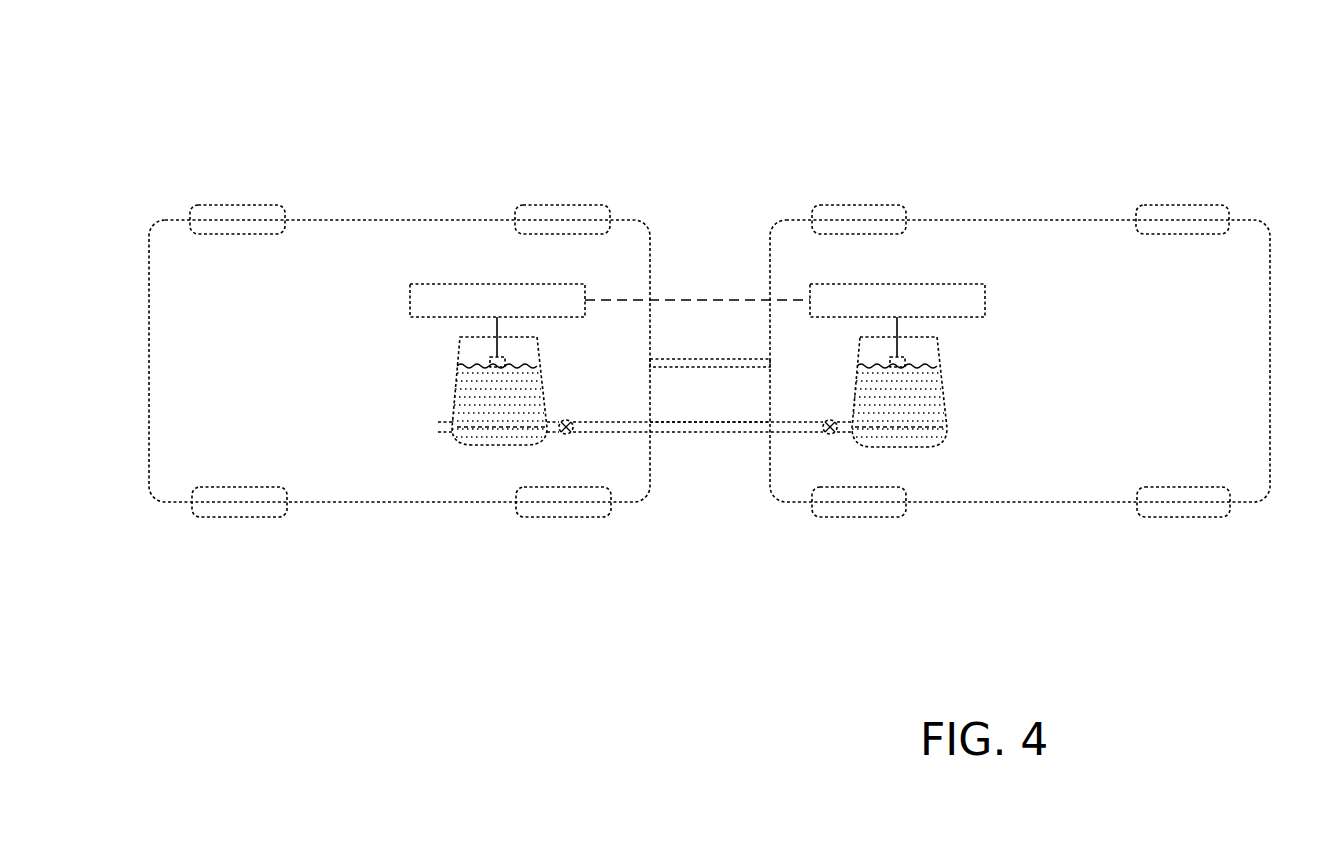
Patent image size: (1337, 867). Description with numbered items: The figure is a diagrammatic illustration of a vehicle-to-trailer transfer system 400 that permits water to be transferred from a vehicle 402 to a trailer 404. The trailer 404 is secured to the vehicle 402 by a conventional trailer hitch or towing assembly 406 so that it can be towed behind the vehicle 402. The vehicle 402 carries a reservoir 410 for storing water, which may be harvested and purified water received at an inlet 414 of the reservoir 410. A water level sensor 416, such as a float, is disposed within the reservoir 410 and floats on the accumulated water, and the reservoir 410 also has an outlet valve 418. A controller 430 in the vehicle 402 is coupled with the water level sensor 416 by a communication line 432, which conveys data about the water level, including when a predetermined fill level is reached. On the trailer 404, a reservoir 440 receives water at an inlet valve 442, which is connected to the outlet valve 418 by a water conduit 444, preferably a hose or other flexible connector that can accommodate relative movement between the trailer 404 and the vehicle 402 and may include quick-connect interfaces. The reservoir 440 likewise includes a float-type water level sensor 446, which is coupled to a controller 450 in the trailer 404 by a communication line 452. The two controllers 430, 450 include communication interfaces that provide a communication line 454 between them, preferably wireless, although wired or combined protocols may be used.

The vehicle-to-trailer transfer system 400 is at (1060, 96).
The vehicle 402 is at (330, 218).
The trailer 404 is at (1065, 220).
The trailer hitch or towing assembly 406 is at (737, 360).
The reservoir 410 is at (457, 395).
The inlet 414 is at (438, 423).
The water level sensor 416 is at (458, 362).
The outlet valve 418 is at (568, 434).
The controller 430 is at (470, 284).
The communication line 432 is at (467, 337).
The reservoir 440 is at (942, 400).
The inlet valve 442 is at (838, 433).
The water conduit 444 is at (710, 433).
The water level sensor 446 is at (937, 373).
The controller 450 is at (953, 284).
The communication line 452 is at (900, 327).
The communication line 454 is at (670, 300).